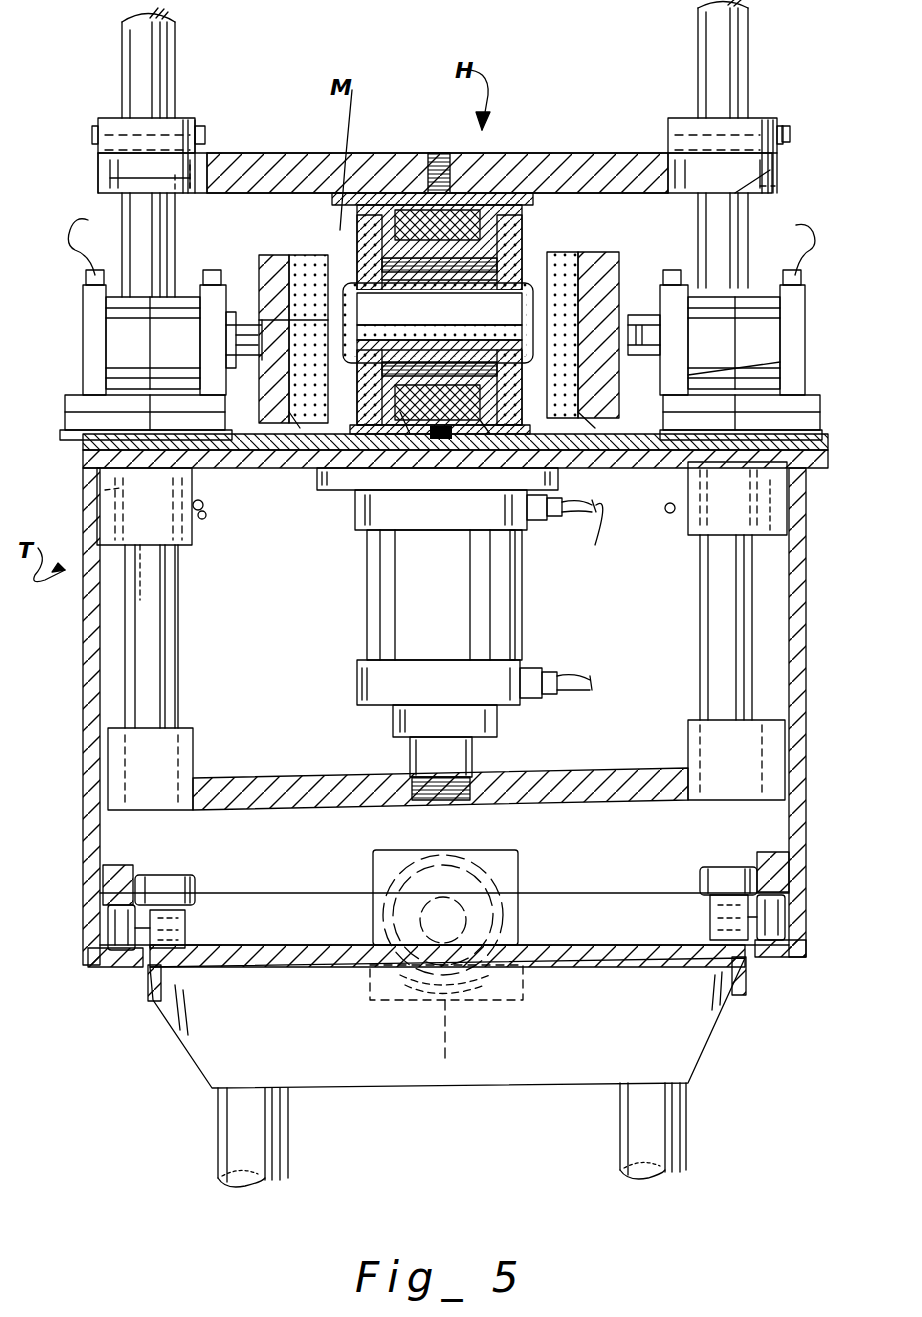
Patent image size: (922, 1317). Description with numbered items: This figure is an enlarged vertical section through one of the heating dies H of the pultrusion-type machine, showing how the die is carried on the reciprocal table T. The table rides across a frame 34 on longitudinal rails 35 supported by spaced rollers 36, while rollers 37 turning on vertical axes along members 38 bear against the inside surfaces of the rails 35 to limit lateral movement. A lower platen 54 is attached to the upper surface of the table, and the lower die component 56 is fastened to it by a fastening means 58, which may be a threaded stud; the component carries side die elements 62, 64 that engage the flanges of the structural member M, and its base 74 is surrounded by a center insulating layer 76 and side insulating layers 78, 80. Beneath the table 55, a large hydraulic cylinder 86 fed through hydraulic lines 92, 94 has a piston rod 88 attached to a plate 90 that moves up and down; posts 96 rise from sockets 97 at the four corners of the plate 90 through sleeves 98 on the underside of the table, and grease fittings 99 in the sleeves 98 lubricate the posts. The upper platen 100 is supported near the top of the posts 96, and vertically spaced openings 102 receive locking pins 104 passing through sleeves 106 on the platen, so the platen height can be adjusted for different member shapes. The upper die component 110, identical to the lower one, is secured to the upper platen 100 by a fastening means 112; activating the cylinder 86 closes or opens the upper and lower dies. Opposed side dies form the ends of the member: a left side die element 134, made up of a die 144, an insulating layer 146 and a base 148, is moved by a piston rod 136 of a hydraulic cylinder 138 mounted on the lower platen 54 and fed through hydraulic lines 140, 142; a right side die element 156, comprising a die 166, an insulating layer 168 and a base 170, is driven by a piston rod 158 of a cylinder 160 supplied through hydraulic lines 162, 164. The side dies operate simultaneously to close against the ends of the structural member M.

The frame 34 is at (330, 1055).
The longitudinal rails 35 is at (103, 880).
The rollers 36 is at (118, 937).
The rollers 37 is at (170, 875).
The members 38 is at (375, 905).
The lower platen 54 is at (812, 445).
The table 55 is at (105, 492).
The lower die component 56 is at (375, 425).
The fastening means 58 is at (420, 430).
The side die element 62 is at (395, 425).
The side die element 64 is at (532, 520).
The base 74 is at (397, 470).
The center insulating layer 76 is at (405, 440).
The side insulating layer 78 is at (365, 425).
The side insulating layer 80 is at (470, 440).
The hydraulic cylinder 86 is at (430, 638).
The piston rod 88 is at (480, 745).
The plate 90 is at (578, 770).
The hydraulic line 92 is at (568, 672).
The hydraulic line 94 is at (592, 520).
The posts 96 is at (130, 645).
The sockets 97 is at (150, 755).
The sleeves 98 is at (150, 530).
The grease fittings 99 is at (190, 495).
The upper platen 100 is at (500, 153).
The vertically spaced openings 102 is at (125, 92).
The locking pins 104 is at (92, 140).
The sleeves 106 is at (185, 120).
The upper die component 110 is at (532, 193).
The fastening means 112 is at (437, 153).
The left side die element 134 is at (268, 245).
The piston rod 136 is at (240, 340).
The hydraulic cylinder 138 is at (130, 325).
The hydraulic line 140 is at (80, 228).
The hydraulic line 142 is at (195, 245).
The die 144 is at (318, 250).
The insulating layer 146 is at (290, 415).
The base 148 is at (260, 315).
The right side die element 156 is at (605, 250).
The piston rod 158 is at (640, 310).
The cylinder 160 is at (760, 320).
The hydraulic line 162 is at (775, 170).
The hydraulic line 164 is at (795, 245).
The die 166 is at (590, 210).
The insulating layer 168 is at (582, 420).
The base 170 is at (710, 372).